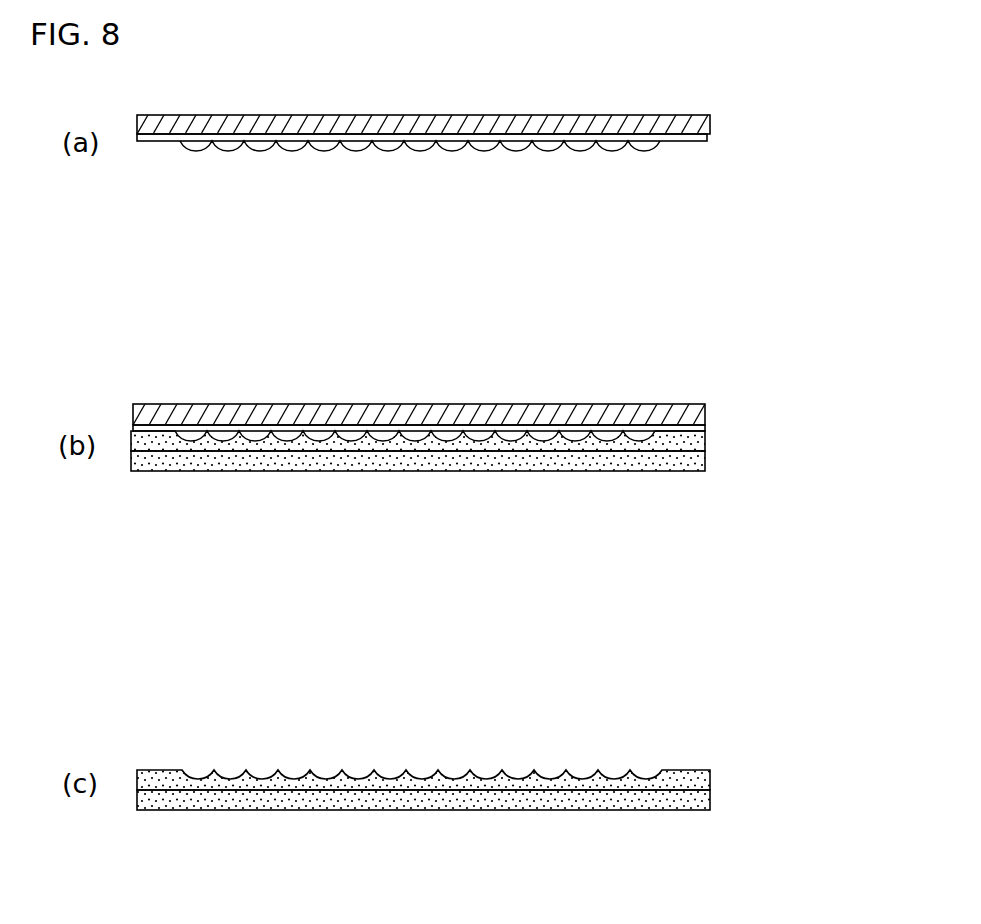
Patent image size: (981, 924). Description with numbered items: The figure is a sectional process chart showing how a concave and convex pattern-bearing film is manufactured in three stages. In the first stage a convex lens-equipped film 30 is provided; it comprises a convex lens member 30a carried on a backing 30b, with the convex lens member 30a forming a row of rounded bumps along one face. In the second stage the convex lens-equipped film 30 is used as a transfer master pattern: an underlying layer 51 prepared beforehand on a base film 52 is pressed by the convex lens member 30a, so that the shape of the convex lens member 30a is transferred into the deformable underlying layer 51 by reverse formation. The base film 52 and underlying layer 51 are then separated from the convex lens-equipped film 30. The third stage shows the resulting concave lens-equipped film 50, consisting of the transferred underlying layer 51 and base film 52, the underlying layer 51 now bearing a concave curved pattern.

The convex lens-equipped film 30 is at (512, 254).
The convex lens member 30a is at (647, 143).
The base film of optical sheet 30b is at (707, 115).
The concave lens-equipped film 50 is at (507, 662).
The underlying layer 51 is at (693, 440).
The base film 52 is at (693, 472).